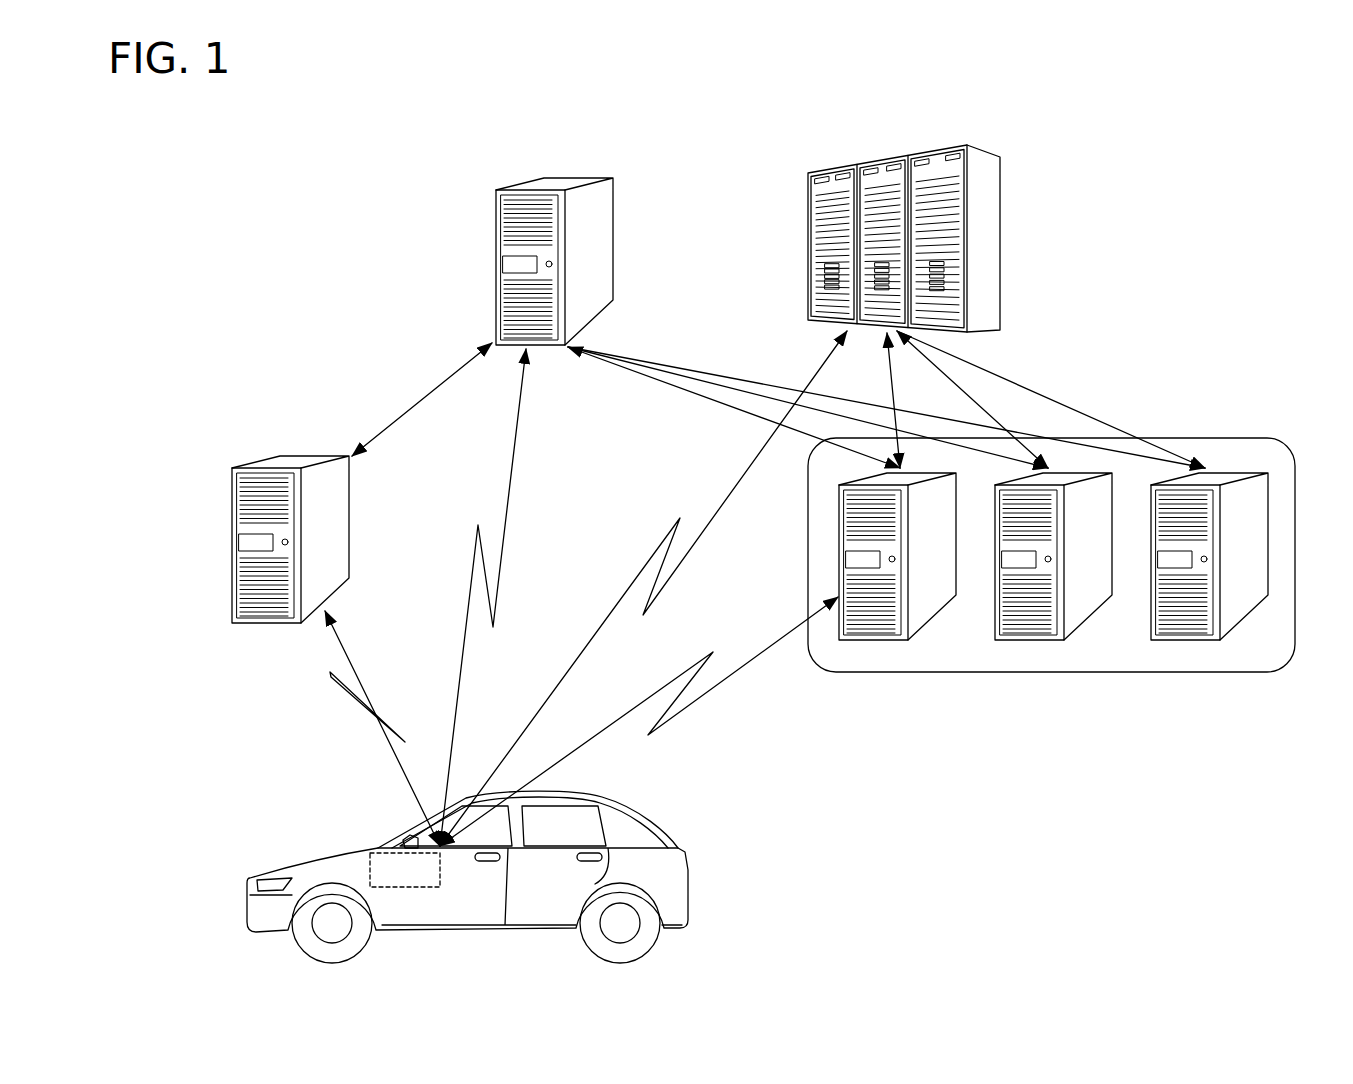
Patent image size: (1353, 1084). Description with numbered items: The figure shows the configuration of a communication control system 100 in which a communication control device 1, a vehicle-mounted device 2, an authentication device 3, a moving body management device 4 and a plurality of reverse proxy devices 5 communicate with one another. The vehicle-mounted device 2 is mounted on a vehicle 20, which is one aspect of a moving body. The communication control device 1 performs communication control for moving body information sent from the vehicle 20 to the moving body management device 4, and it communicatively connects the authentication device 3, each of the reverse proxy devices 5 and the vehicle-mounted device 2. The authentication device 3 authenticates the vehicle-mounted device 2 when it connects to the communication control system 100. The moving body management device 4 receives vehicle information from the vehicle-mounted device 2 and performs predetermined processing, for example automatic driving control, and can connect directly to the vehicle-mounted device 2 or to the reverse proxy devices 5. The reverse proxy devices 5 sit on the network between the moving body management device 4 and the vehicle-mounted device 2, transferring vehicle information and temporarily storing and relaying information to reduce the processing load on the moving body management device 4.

The communication control system 100 is at (712, 155).
The communication control device 1 is at (530, 180).
The vehicle-mounted device 2 is at (370, 868).
The authentication device 3 is at (268, 458).
The moving body management device 4 is at (1001, 245).
The reverse proxy devices 5 is at (1218, 438).
The vehicle 20 is at (690, 882).